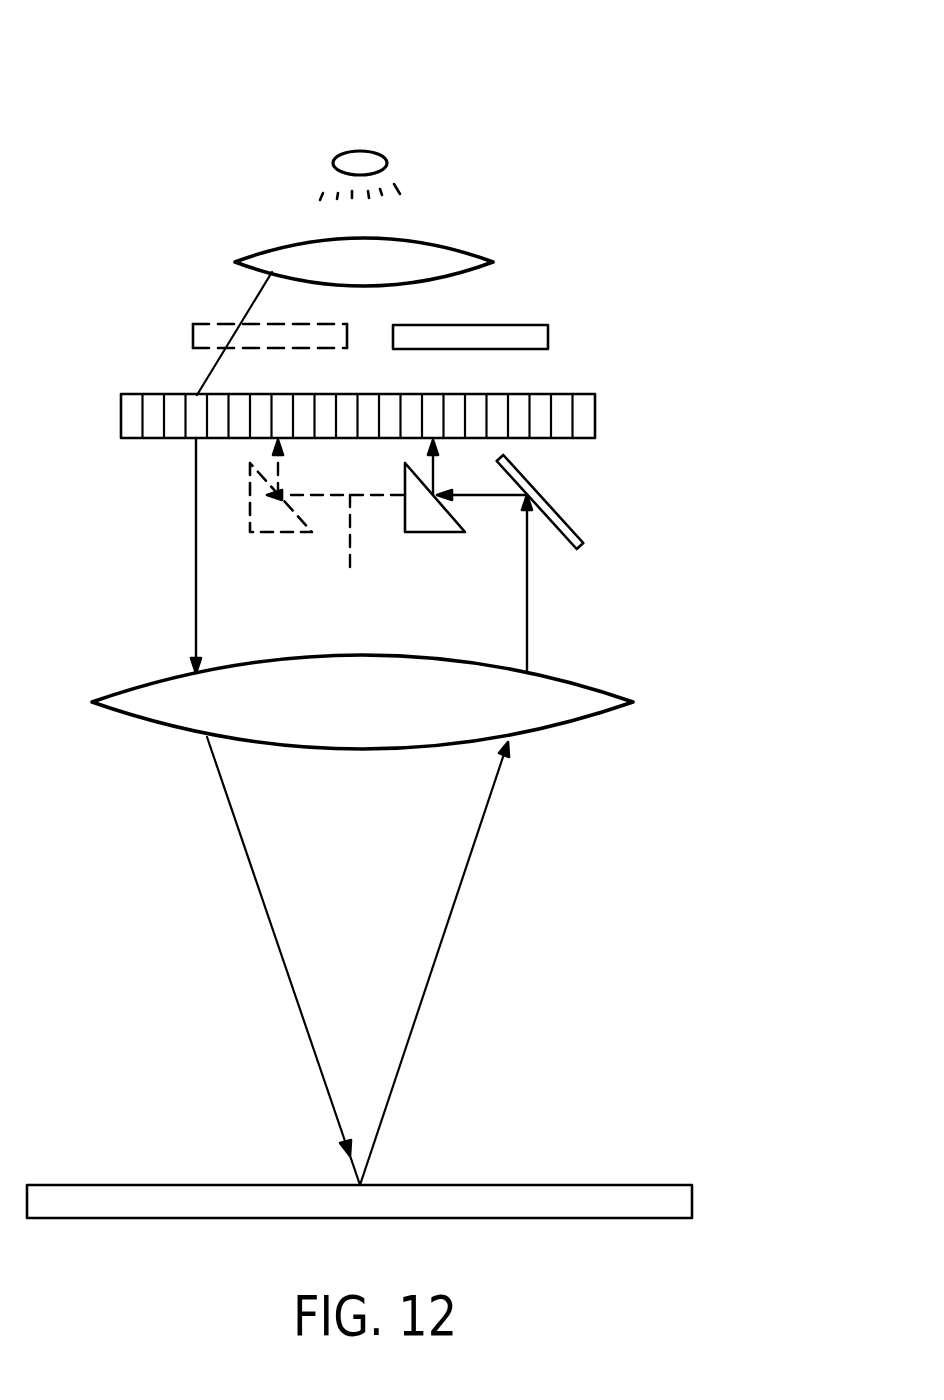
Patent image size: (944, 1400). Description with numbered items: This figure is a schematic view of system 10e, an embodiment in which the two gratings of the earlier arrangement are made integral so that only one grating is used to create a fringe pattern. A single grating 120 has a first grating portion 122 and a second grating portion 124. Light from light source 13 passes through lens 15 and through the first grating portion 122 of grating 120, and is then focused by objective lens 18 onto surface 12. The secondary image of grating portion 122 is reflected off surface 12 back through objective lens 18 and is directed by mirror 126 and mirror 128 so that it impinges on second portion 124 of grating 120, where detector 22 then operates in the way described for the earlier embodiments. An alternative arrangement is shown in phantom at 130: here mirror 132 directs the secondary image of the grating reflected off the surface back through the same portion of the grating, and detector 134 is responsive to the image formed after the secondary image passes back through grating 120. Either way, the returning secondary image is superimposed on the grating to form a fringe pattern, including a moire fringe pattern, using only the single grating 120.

The system 10e is at (640, 41).
The light source 13 is at (385, 157).
The lens 15 is at (460, 246).
The detector 134 is at (205, 322).
The detector 22 is at (533, 325).
The grating 120 is at (595, 420).
The second grating portion 124 is at (540, 394).
The first grating portion 122 is at (177, 438).
The mirror 128 is at (437, 532).
The alternative arrangement shown in phantom 130 is at (335, 528).
The mirror 132 is at (280, 537).
The mirror 126 is at (577, 527).
The objective lens 18 is at (577, 725).
The surface 12 is at (570, 1185).